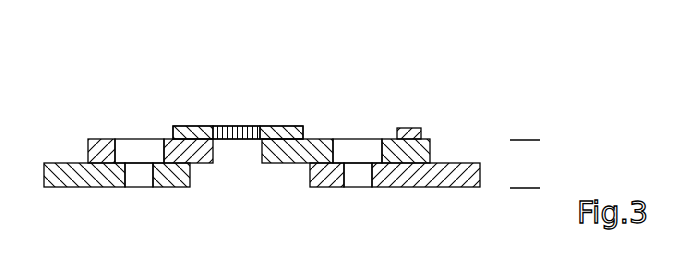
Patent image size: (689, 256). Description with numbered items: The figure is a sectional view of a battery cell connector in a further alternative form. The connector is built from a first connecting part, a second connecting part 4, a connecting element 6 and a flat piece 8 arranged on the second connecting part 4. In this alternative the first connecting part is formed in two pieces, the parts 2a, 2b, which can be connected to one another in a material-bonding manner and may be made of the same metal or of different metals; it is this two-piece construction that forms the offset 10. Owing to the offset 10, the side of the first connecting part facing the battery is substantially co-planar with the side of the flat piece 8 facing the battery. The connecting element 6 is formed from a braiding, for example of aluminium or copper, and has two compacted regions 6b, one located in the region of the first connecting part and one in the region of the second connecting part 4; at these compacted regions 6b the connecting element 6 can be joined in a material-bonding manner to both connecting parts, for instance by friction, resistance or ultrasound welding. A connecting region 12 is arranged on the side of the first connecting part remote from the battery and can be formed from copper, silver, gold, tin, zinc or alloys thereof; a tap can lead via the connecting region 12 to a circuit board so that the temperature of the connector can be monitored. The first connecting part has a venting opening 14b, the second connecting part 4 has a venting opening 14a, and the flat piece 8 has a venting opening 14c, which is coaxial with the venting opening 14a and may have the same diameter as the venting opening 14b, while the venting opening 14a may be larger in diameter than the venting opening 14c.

The part of the first connecting part 2a is at (322, 137).
The part of the first connecting part 2b is at (457, 177).
The second connecting part 4 is at (97, 135).
The connecting element 6 is at (280, 96).
The compacted regions 6b is at (277, 127).
The flat piece 8 is at (73, 175).
The offset 10 is at (525, 103).
The connecting region 12 is at (412, 128).
The venting opening 14a is at (137, 137).
The venting opening 14b is at (362, 137).
The venting opening 14c is at (138, 175).